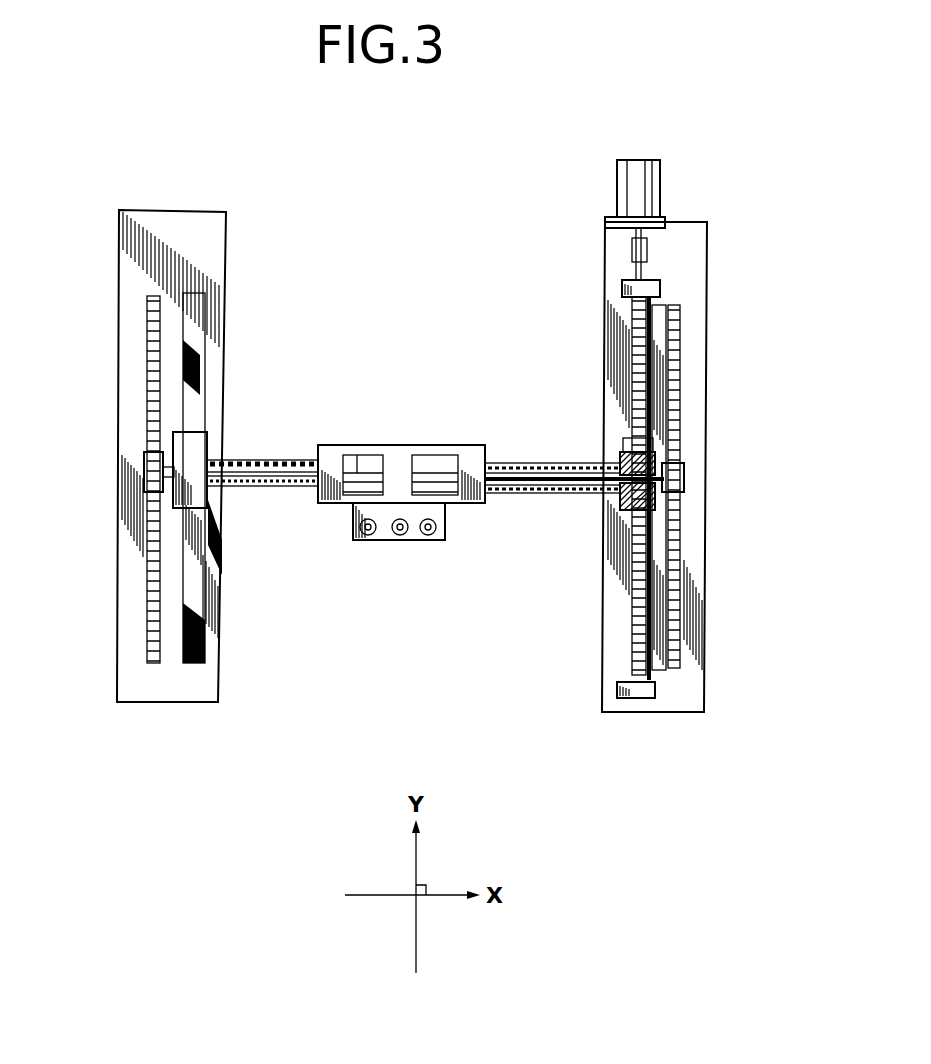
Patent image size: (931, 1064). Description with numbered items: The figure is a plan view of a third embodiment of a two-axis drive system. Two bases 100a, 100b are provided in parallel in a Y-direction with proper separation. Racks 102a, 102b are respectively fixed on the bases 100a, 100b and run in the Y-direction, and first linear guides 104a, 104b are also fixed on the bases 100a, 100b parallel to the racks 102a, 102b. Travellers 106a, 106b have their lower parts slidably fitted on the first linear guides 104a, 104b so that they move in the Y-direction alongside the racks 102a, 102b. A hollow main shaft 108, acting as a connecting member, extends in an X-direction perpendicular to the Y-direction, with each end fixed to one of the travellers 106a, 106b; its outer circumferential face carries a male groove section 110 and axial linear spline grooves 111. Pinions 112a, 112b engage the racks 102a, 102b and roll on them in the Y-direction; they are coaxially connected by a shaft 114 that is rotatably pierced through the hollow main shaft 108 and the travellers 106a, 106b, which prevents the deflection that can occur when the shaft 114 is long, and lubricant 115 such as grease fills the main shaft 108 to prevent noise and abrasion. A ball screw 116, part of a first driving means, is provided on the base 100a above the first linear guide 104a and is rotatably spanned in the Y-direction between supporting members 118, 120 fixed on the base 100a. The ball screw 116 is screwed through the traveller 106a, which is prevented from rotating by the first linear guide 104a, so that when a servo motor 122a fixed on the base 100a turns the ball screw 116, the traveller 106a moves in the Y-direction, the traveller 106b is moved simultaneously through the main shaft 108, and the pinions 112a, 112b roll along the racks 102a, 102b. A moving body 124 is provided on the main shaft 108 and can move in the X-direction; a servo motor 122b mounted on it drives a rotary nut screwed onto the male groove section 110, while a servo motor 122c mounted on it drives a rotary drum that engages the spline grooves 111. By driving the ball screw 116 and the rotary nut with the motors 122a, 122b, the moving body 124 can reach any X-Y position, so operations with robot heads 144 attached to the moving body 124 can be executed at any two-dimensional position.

The base 100a is at (693, 712).
The base 100b is at (172, 702).
The rack 102a is at (676, 543).
The rack 102b is at (148, 540).
The first linear guide 104a is at (654, 655).
The first linear guide 104b is at (187, 578).
The traveller 106a is at (656, 452).
The traveller 106b is at (182, 442).
The hollow main shaft 108 is at (545, 464).
The male groove section 110 is at (258, 462).
The linear spline grooves 111 is at (280, 488).
The pinion 112a is at (668, 480).
The pinion 112b is at (156, 471).
The shaft 114 is at (548, 492).
The lubricant 115 is at (500, 462).
The ball screw 116 is at (632, 590).
The supporting member 118 is at (660, 285).
The supporting member 120 is at (635, 690).
The servo motor 122a is at (660, 185).
The servo motor 122b is at (440, 470).
The servo motor 122c is at (357, 470).
The moving body 124 is at (352, 504).
The robot heads 144 is at (398, 540).